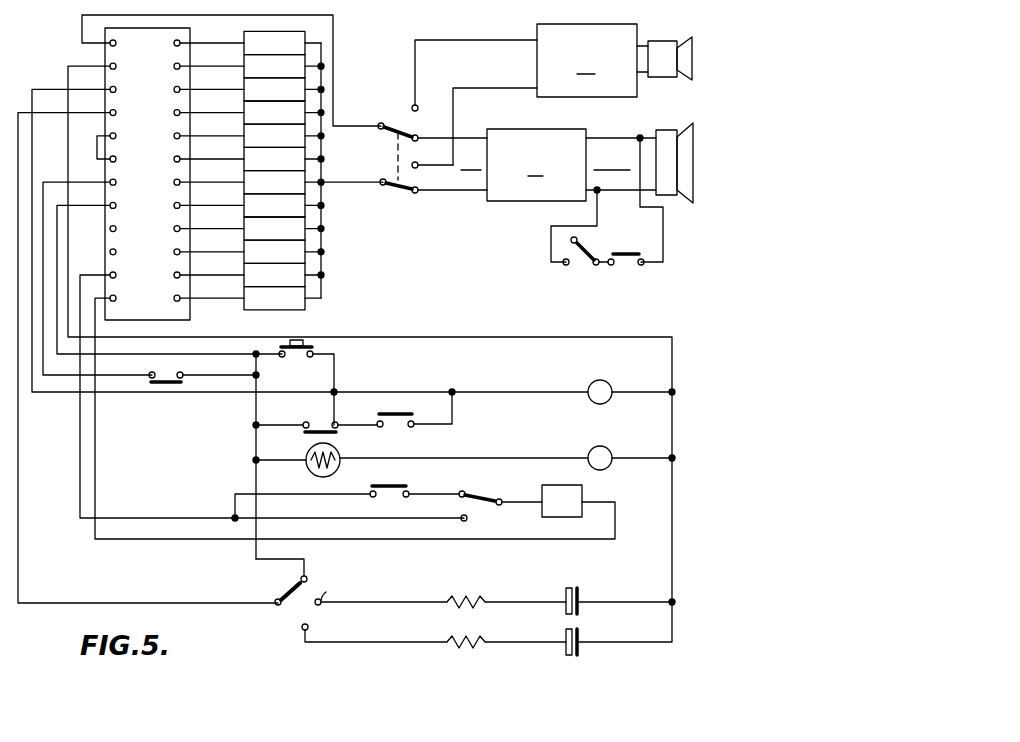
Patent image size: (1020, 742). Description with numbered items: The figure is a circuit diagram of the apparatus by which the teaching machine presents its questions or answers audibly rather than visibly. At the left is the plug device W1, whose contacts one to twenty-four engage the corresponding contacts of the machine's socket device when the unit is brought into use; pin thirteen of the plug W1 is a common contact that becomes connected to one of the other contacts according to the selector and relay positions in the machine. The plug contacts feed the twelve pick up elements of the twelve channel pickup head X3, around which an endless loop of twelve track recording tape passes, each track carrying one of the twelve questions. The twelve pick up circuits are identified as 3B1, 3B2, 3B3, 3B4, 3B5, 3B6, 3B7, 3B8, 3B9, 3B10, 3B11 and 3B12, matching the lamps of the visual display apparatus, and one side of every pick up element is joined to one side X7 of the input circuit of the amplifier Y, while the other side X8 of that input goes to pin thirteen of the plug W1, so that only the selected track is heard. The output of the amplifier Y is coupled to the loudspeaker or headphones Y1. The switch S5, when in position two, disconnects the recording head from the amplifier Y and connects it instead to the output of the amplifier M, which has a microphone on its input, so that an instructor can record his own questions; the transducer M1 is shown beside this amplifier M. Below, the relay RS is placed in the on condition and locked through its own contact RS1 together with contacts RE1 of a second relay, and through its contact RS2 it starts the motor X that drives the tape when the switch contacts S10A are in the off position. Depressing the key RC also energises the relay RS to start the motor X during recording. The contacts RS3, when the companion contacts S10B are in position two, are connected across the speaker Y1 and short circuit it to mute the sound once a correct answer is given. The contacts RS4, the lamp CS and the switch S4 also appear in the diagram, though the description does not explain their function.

The plug device W1 is at (104, 49).
The twelve channel pickup head X3 is at (261, 164).
The pick up element circuit 3B1 is at (282, 42).
The pick up element circuit 3B2 is at (284, 66).
The pick up element circuit 3B3 is at (284, 89).
The pick up element circuit 3B4 is at (284, 112).
The pick up element circuit 3B5 is at (284, 135).
The pick up element circuit 3B6 is at (284, 158).
The pick up element circuit 3B7 is at (284, 182).
The pick up element circuit 3B8 is at (284, 205).
The pick up element circuit 3B9 is at (284, 228).
The pick up element circuit 3B10 is at (284, 251).
The pick up element circuit 3B11 is at (284, 274).
The pick up element circuit 3B12 is at (282, 298).
The switch S5 is at (382, 167).
The other side of amplifier input circuit X8 is at (472, 133).
The one side of amplifier input circuit X7 is at (477, 193).
The amplifier M is at (587, 60).
The motor-driven transducer M1 is at (660, 41).
The amplifier Y is at (548, 165).
The loudspeaker or headphones Y1 is at (672, 130).
The contacts of switch S10 S10B is at (586, 266).
The contacts of relay RS RS3 is at (646, 233).
The key RC is at (321, 340).
The relay contact RS4 is at (167, 386).
The contacts of relay RE RE1 is at (322, 427).
The contact of relay RS RS1 is at (391, 403).
The signal lamp CS is at (341, 450).
The relay RS is at (590, 382).
The contact of relay RS RS2 is at (412, 490).
The contacts of switch S10 S10A is at (496, 491).
The motor X is at (562, 501).
The selector switch S4 is at (288, 606).